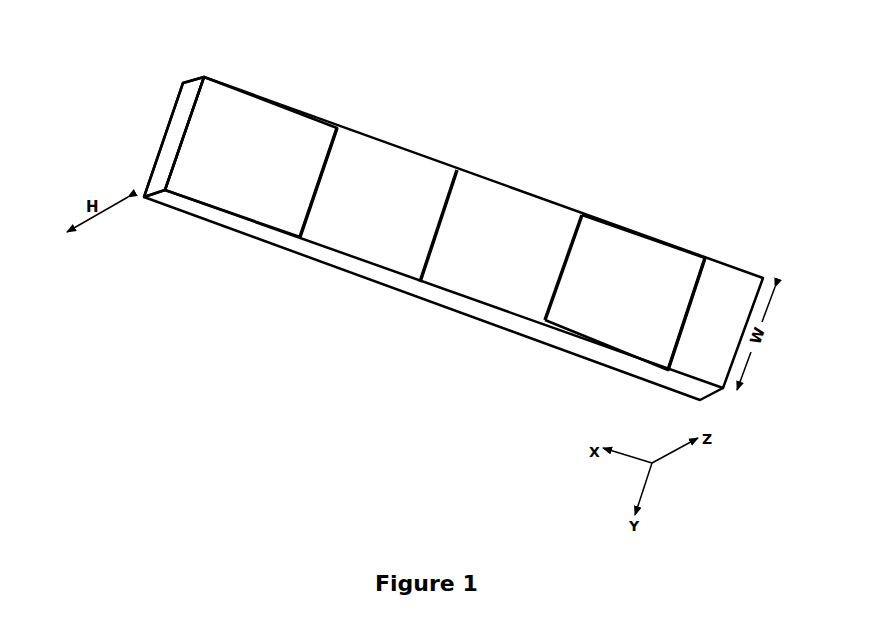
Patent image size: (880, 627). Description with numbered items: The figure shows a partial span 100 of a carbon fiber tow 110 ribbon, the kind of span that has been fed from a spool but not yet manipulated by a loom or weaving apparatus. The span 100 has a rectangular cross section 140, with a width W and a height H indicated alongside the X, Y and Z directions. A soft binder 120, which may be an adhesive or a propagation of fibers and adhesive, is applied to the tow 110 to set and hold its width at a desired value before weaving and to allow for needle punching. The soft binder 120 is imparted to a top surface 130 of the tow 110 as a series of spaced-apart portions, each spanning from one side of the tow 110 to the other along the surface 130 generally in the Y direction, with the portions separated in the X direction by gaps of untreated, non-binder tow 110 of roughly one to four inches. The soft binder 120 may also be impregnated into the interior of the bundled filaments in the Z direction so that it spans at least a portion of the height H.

The span 100 is at (441, 220).
The tow 110 is at (610, 258).
The soft binder 120 is at (707, 270).
The top surface 130 is at (248, 118).
The rectangular cross section 140 is at (170, 142).